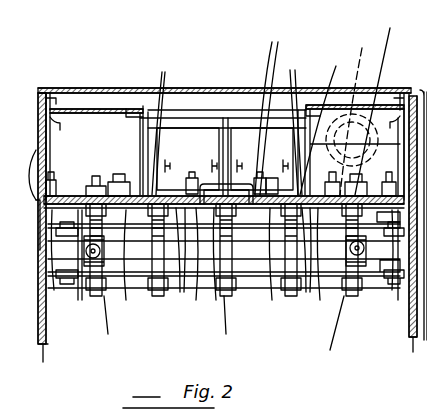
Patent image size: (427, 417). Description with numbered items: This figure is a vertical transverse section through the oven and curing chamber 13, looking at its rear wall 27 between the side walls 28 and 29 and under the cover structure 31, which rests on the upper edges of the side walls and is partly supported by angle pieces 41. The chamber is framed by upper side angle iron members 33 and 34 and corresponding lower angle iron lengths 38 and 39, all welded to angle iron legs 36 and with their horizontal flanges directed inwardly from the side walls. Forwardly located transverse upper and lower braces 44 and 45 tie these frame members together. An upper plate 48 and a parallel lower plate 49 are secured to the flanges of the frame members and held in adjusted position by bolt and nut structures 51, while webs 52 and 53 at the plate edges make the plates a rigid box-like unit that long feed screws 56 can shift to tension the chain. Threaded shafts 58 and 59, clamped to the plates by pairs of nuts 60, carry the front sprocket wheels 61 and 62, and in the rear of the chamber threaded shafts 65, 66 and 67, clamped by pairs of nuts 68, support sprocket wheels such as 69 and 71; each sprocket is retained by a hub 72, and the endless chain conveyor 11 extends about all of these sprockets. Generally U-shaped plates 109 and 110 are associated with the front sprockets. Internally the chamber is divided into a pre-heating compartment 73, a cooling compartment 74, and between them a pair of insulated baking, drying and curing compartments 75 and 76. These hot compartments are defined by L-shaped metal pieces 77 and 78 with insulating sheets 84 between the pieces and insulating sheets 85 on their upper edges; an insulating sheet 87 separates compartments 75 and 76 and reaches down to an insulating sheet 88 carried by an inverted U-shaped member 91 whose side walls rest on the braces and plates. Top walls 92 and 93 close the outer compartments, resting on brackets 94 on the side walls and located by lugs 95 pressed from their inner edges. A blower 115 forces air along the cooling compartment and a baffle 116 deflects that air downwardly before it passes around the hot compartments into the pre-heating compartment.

The endless chain conveyor 11 is at (71, 186).
The oven and curing chamber 13 is at (131, 78).
The rear wall 27 is at (194, 108).
The side wall 28 is at (37, 150).
The side wall 29 is at (424, 92).
The cover structure 31 is at (245, 108).
The side angle iron member 33 is at (44, 228).
The side angle iron member 34 is at (378, 194).
The leg 36 is at (227, 239).
The lower frame angle iron length 38 is at (52, 296).
The lower frame angle iron length 39 is at (393, 296).
The angle piece 41 is at (50, 94).
The upper transverse angle iron brace 44 is at (270, 290).
The lower transverse angle iron brace 45 is at (283, 296).
The upper plate 48 is at (154, 292).
The lower plate 49 is at (226, 296).
The bolt and nut structure 51 is at (62, 284).
The web 52 is at (224, 211).
The web 53 is at (370, 236).
The feed screw 56 is at (88, 298).
The threaded shaft 58 is at (152, 296).
The threaded shaft 59 is at (290, 296).
The nut 60 is at (180, 294).
The sprocket wheel 61 is at (167, 190).
The sprocket wheel 62 is at (256, 190).
The threaded shaft 65 is at (100, 296).
The threaded shaft 66 is at (218, 302).
The threaded shaft 67 is at (348, 296).
The nut 68 is at (221, 335).
The sprocket wheel 69 is at (95, 176).
The sprocket wheel 71 is at (360, 186).
The hub 72 is at (118, 182).
The pre-heating compartment 73 is at (95, 154).
The cooling compartment 74 is at (387, 152).
The baking, drying and curing compartment 75 is at (188, 159).
The baking, drying and curing compartment 76 is at (262, 158).
The L-shaped metal piece 77 is at (135, 137).
The L-shaped metal piece 78 is at (320, 134).
The insulating sheet 84 is at (227, 121).
The insulating sheet 85 is at (274, 108).
The insulating sheet 87 is at (226, 118).
The insulating sheet 88 is at (193, 178).
The inverted U-shaped member 91 is at (196, 302).
The top wall 92 is at (80, 108).
The top wall 93 is at (325, 121).
The bracket 94 is at (59, 124).
The lug 95 is at (318, 80).
The U-shaped plate 109 is at (126, 304).
The U-shaped plate 110 is at (320, 304).
The blower 115 is at (363, 111).
The baffle 116 is at (384, 101).